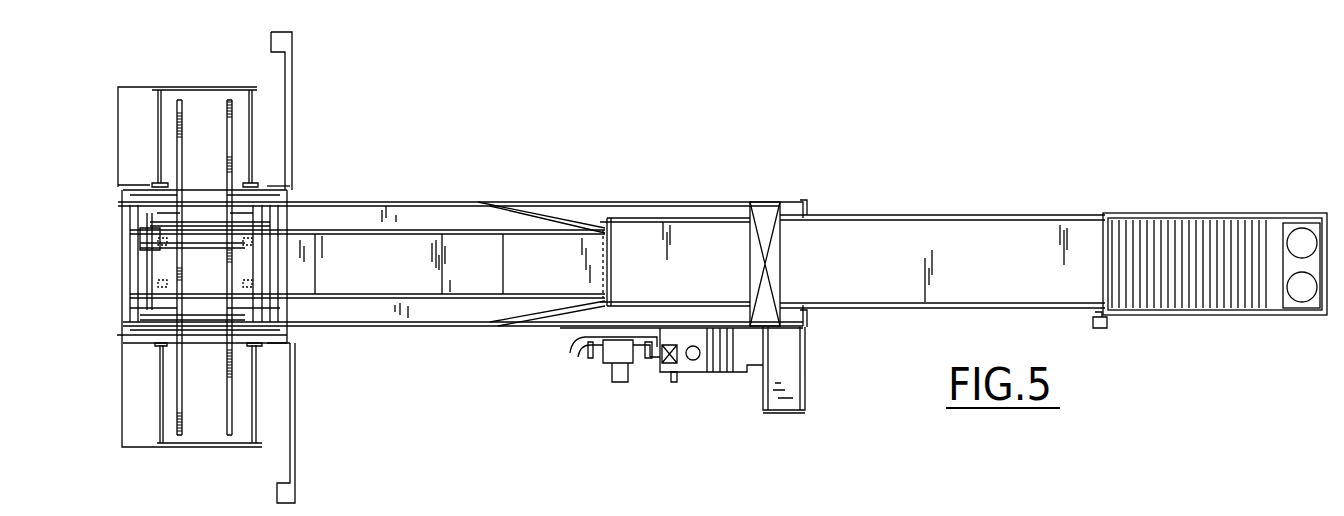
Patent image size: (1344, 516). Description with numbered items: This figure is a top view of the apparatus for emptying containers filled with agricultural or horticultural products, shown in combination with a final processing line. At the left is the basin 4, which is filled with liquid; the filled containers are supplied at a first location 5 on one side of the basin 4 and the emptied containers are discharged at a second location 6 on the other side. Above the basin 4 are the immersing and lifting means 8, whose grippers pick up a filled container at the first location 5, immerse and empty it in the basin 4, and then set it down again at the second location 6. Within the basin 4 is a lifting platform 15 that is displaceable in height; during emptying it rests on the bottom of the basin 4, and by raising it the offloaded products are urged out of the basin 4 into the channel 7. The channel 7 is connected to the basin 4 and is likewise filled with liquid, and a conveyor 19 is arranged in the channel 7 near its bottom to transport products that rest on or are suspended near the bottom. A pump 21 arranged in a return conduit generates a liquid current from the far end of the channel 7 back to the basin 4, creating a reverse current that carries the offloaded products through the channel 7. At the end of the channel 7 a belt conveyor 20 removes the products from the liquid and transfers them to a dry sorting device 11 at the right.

The basin 4 is at (167, 313).
The first location 5 is at (114, 148).
The second location 6 is at (121, 386).
The channel 7 is at (390, 315).
The immersing and lifting means 8 is at (150, 235).
The sorting device 11 is at (1225, 213).
The lifting platform 15 is at (168, 268).
The conveyor 19 is at (480, 258).
The belt conveyor 20 is at (900, 258).
The pump 21 is at (622, 375).